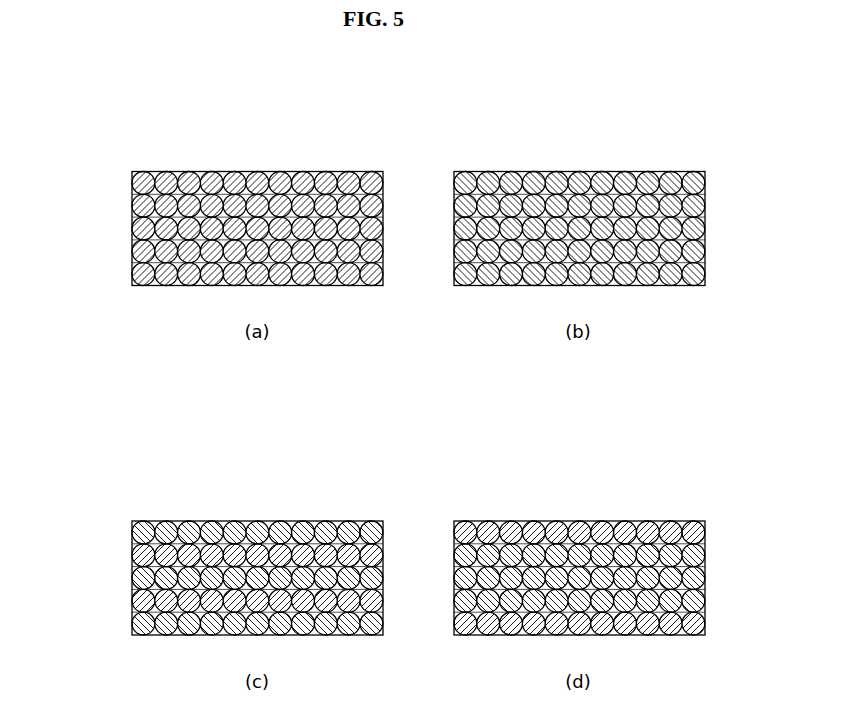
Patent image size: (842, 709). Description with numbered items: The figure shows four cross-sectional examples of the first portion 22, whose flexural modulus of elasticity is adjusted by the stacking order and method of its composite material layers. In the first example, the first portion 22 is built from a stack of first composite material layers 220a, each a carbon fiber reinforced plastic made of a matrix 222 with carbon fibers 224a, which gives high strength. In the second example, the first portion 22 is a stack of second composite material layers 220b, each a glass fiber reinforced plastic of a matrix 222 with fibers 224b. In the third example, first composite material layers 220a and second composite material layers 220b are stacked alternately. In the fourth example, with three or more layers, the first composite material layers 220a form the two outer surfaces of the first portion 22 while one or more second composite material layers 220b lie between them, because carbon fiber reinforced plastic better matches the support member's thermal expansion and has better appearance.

The first portion 22 is at (58, 160).
The first composite material layer 220a is at (421, 370).
The second composite material layer 220b is at (421, 370).
The matrix 222 is at (365, 179).
The carbon fibers 224a is at (277, 181).
The carbon fibers 224b is at (553, 181).